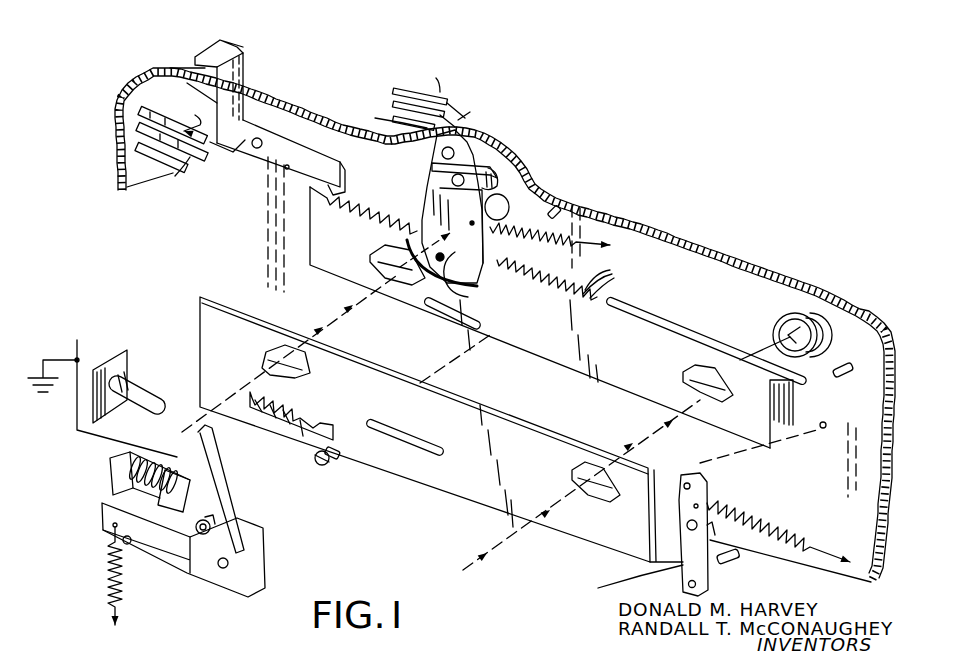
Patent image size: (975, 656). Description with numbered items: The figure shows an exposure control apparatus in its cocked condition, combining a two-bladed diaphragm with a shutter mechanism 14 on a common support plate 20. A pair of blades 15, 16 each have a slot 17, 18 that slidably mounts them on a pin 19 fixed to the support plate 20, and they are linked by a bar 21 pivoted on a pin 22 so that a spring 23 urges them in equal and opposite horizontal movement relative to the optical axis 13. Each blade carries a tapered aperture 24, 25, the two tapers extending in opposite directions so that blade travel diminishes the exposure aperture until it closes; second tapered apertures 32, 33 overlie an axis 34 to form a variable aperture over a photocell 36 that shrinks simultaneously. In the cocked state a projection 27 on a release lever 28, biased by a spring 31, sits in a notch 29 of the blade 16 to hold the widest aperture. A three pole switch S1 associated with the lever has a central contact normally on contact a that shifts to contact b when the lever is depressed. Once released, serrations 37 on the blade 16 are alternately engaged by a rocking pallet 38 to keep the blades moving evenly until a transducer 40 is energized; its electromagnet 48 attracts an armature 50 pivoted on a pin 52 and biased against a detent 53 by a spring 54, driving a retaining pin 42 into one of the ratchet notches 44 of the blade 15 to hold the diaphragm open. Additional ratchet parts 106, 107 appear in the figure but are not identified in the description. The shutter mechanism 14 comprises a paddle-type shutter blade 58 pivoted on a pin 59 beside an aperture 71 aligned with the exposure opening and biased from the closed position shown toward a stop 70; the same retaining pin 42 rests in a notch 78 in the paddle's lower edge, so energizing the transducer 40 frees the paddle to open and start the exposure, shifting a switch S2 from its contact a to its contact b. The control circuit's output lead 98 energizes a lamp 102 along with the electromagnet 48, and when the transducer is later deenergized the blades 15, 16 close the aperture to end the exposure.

The three pole switch S1 is at (162, 105).
The switch S2 is at (462, 98).
The contact a is at (311, 99).
The contact b is at (295, 148).
The optical axis 13 is at (335, 313).
The shutter mechanism 14 is at (425, 162).
The blade 15 is at (507, 413).
The blade 16 is at (693, 297).
The slot 17 is at (400, 452).
The slot 18 is at (443, 312).
The pin 19 is at (332, 466).
The support plate 20 is at (708, 246).
The bar 21 is at (600, 587).
The pin 22 is at (683, 480).
The spring 23 is at (790, 530).
The tapered aperture 24 is at (263, 357).
The tapered aperture 25 is at (368, 258).
The projection 27 is at (340, 180).
The release lever 28 is at (243, 65).
The notch 29 is at (327, 200).
The spring 31 is at (193, 75).
The second tapered aperture 32 is at (600, 496).
The second tapered aperture 33 is at (690, 372).
The axis 34 is at (653, 427).
The photocell 36 is at (800, 312).
The serrations 37 is at (567, 279).
The rocking pallet 38 is at (493, 173).
The transducer 40 is at (109, 485).
The retaining pin 42 is at (202, 435).
The ratchet notches 44 is at (303, 433).
The electromagnet 48 is at (120, 473).
The armature 50 is at (173, 545).
The pin 52 is at (213, 522).
The detent 53 is at (128, 547).
The spring 54 is at (112, 577).
The shutter blade 58 is at (425, 205).
The pin 59 is at (588, 240).
The stop 70 is at (572, 210).
The aperture 71 is at (505, 195).
The notch 78 is at (468, 297).
The output lead 98 is at (112, 350).
The lamp 102 is at (153, 390).
The ratchet teeth 106 is at (252, 408).
The ratchet bar 107 is at (312, 410).